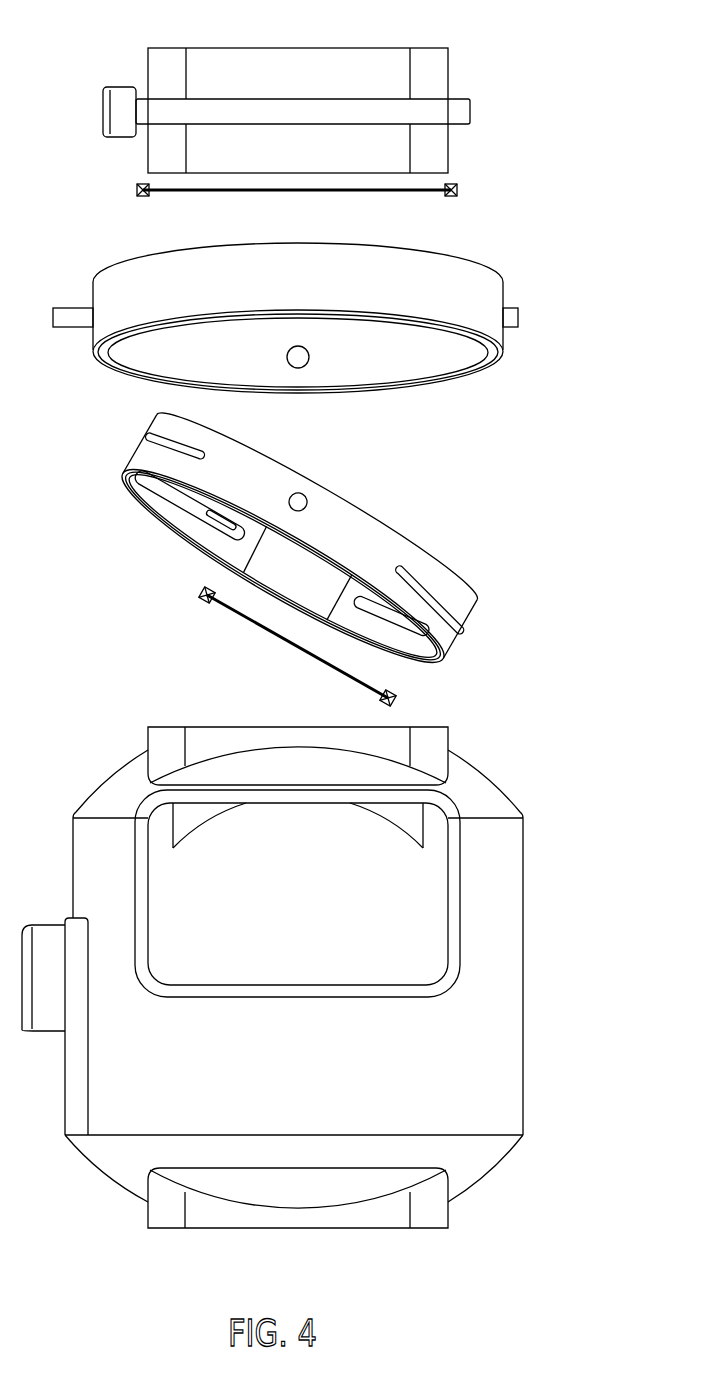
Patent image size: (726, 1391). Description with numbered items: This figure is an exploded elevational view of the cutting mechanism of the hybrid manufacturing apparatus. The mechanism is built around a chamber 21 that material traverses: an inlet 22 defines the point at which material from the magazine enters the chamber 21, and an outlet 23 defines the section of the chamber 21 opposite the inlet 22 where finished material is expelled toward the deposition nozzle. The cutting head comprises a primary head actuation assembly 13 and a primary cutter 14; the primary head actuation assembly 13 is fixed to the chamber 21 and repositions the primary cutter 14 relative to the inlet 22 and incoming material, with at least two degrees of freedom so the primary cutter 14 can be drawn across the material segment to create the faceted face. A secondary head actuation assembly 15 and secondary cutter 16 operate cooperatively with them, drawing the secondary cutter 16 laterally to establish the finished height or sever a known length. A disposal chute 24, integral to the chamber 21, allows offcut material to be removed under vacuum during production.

The primary head actuation assembly 13 is at (502, 358).
The primary cutter 14 is at (203, 594).
The secondary head actuation assembly 15 is at (132, 87).
The secondary cutter 16 is at (458, 187).
The chamber 21 is at (505, 1048).
The inlet 22 is at (250, 719).
The outlet 23 is at (365, 1236).
The disposal chute 24 is at (393, 910).